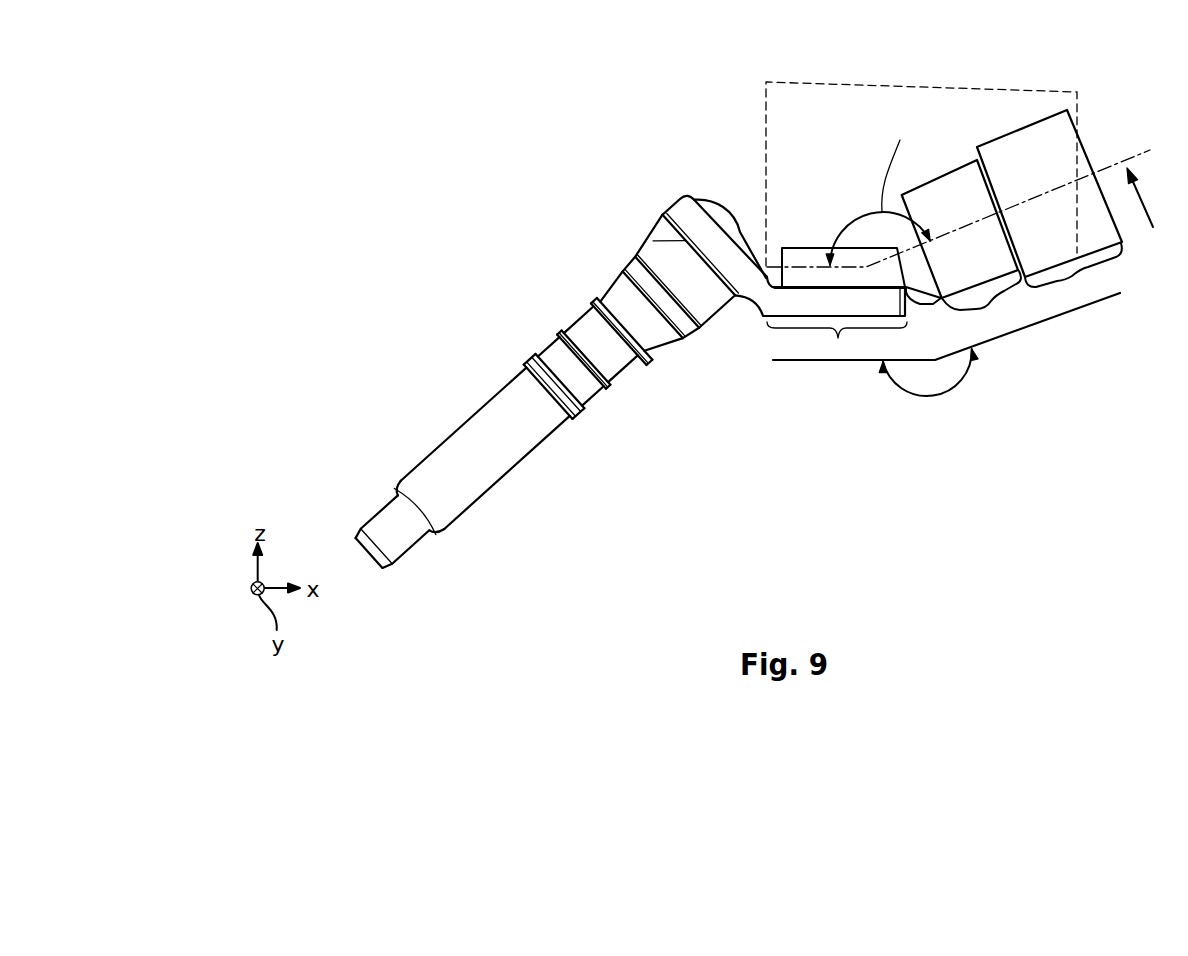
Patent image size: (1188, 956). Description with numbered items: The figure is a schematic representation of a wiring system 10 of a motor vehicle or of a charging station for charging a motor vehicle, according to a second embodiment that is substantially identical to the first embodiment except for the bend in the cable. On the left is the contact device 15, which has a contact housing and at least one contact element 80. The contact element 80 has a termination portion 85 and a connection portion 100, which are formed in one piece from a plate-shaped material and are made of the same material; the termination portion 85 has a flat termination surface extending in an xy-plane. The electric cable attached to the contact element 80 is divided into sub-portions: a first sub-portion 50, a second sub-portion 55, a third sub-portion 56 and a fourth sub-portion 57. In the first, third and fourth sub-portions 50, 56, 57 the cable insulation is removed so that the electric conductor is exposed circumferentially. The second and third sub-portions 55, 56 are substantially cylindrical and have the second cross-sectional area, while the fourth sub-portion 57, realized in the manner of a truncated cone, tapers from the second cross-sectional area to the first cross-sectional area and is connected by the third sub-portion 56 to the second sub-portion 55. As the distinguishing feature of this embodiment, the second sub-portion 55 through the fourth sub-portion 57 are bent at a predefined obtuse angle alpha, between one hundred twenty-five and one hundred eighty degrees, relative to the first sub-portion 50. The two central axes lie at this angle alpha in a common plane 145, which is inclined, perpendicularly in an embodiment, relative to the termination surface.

The wiring system 10 is at (372, 133).
The contact device 15 is at (701, 400).
The first sub-portion 50 is at (782, 243).
The second sub-portion 55 is at (1085, 280).
The third sub-portion 56 is at (993, 303).
The fourth sub-portion 57 is at (925, 303).
The contact element 80 is at (752, 300).
The termination portion 85 is at (838, 338).
The connection portion 100 is at (733, 228).
The common plane 145 is at (1027, 90).